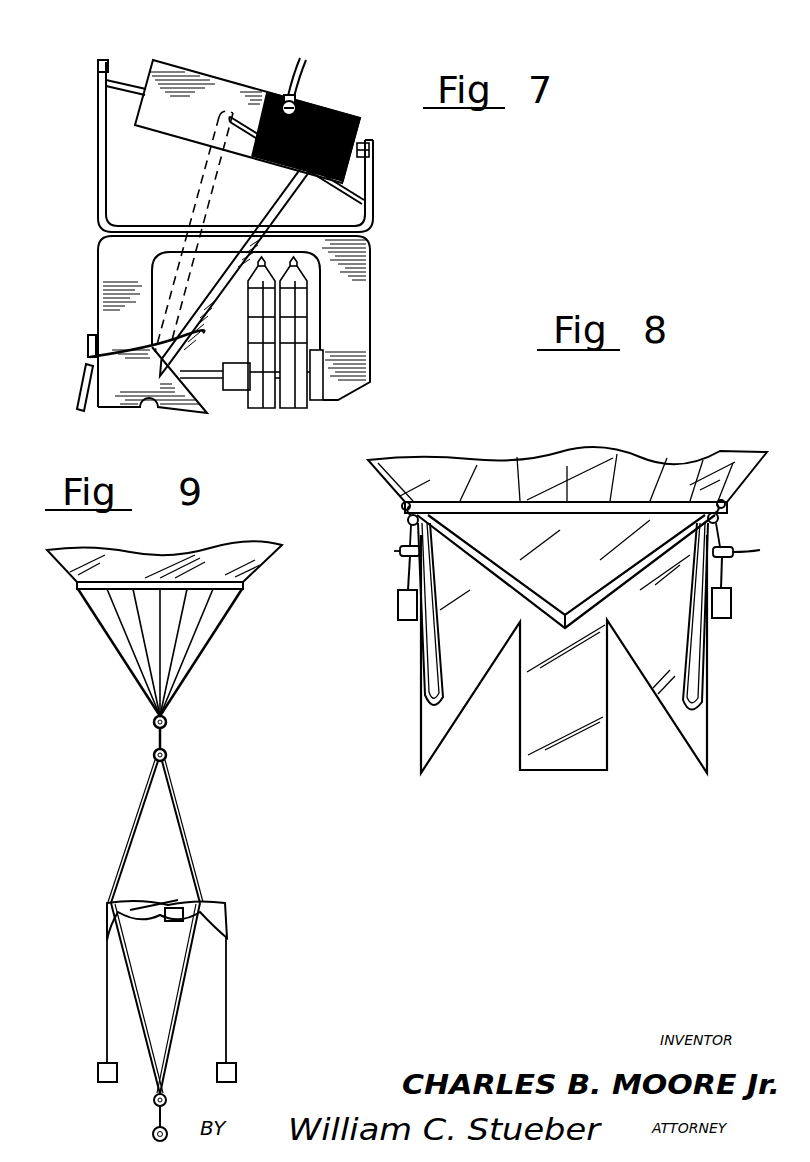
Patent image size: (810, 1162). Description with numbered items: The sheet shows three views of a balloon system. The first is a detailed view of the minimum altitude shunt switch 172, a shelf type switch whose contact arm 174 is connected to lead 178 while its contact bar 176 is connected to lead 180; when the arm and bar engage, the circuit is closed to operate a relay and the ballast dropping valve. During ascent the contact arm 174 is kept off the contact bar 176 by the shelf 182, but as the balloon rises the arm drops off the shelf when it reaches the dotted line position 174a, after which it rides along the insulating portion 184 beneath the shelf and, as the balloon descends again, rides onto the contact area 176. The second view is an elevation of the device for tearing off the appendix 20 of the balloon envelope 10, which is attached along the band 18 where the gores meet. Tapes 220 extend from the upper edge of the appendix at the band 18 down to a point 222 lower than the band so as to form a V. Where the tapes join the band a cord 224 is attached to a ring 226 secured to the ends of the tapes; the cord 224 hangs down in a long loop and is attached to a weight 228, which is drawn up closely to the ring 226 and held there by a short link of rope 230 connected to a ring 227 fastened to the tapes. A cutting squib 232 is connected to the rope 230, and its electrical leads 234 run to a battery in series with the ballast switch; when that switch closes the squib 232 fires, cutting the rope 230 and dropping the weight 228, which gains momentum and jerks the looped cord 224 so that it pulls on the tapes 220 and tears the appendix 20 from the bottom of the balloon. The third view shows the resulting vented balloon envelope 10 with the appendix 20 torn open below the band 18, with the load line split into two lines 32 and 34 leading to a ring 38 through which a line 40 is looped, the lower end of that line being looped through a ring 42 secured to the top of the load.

In FIG. 7, the shunt switch 172 is at (80, 186).
In FIG. 7, the contact arm 174 is at (282, 194).
In FIG. 7, the dotted line position of contact arm 174a is at (205, 184).
In FIG. 7, the contact bar 176 is at (312, 100).
In FIG. 7, the lead 178 is at (87, 368).
In FIG. 7, the lead 180 is at (295, 60).
In FIG. 7, the shelf 182 is at (348, 182).
In FIG. 7, the insulating portion 184 is at (172, 62).
In FIG. 8, the balloon envelope 10 is at (632, 452).
In FIG. 9, the balloon envelope 10 is at (54, 560).
In FIG. 8, the band 18 is at (520, 510).
In FIG. 9, the band 18 is at (190, 588).
In FIG. 8, the appendix 20 is at (430, 740).
In FIG. 9, the appendix 20 is at (110, 903).
In FIG. 9, the line 32 is at (133, 843).
In FIG. 9, the line 34 is at (187, 840).
In FIG. 9, the ring 38 is at (165, 1095).
In FIG. 9, the line 40 is at (158, 1117).
In FIG. 9, the ring 42 is at (153, 1135).
In FIG. 8, the tapes 220 is at (648, 565).
In FIG. 8, the point 222 is at (562, 613).
In FIG. 8, the cord 224 is at (682, 630).
In FIG. 9, the cord 224 is at (107, 992).
In FIG. 8, the ring 226 is at (410, 506).
In FIG. 8, the ring 227 is at (402, 504).
In FIG. 8, the weight 228 is at (398, 608).
In FIG. 9, the weight 228 is at (233, 1067).
In FIG. 8, the link of rope 230 is at (404, 548).
In FIG. 8, the cutting squib 232 is at (398, 553).
In FIG. 8, the electrical leads 234 is at (760, 550).